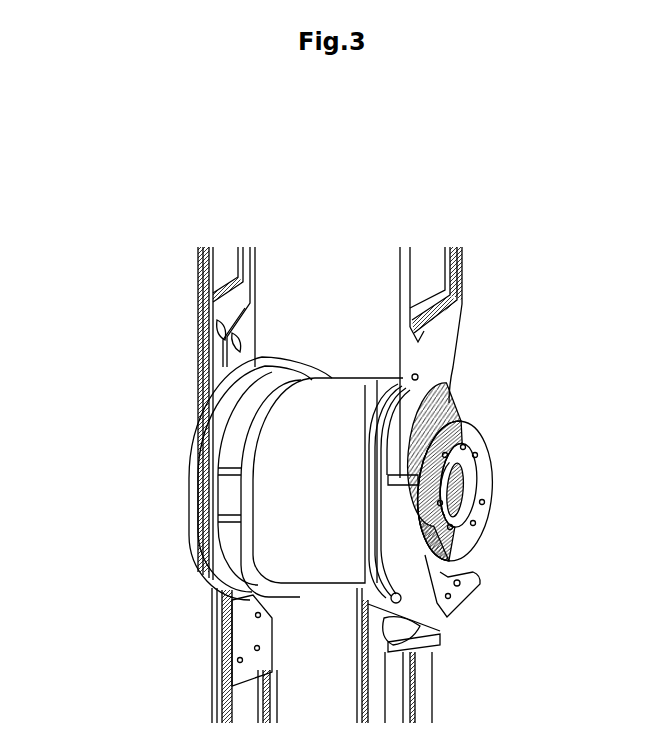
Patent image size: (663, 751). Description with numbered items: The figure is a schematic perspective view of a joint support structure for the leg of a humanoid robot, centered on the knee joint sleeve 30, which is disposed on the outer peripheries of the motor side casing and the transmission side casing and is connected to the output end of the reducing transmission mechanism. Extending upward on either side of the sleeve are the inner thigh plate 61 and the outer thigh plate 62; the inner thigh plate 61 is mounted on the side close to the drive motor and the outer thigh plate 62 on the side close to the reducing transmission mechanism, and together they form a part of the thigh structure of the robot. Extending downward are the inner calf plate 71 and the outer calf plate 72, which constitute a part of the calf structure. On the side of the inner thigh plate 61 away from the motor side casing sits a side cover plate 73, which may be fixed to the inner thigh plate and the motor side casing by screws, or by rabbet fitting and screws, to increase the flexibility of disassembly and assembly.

The knee joint sleeve 30 is at (322, 418).
The inner thigh plate 61 is at (213, 352).
The outer thigh plate 62 is at (435, 363).
The inner calf plate 71 is at (240, 642).
The outer calf plate 72 is at (434, 610).
The side cover plate 73 is at (194, 488).